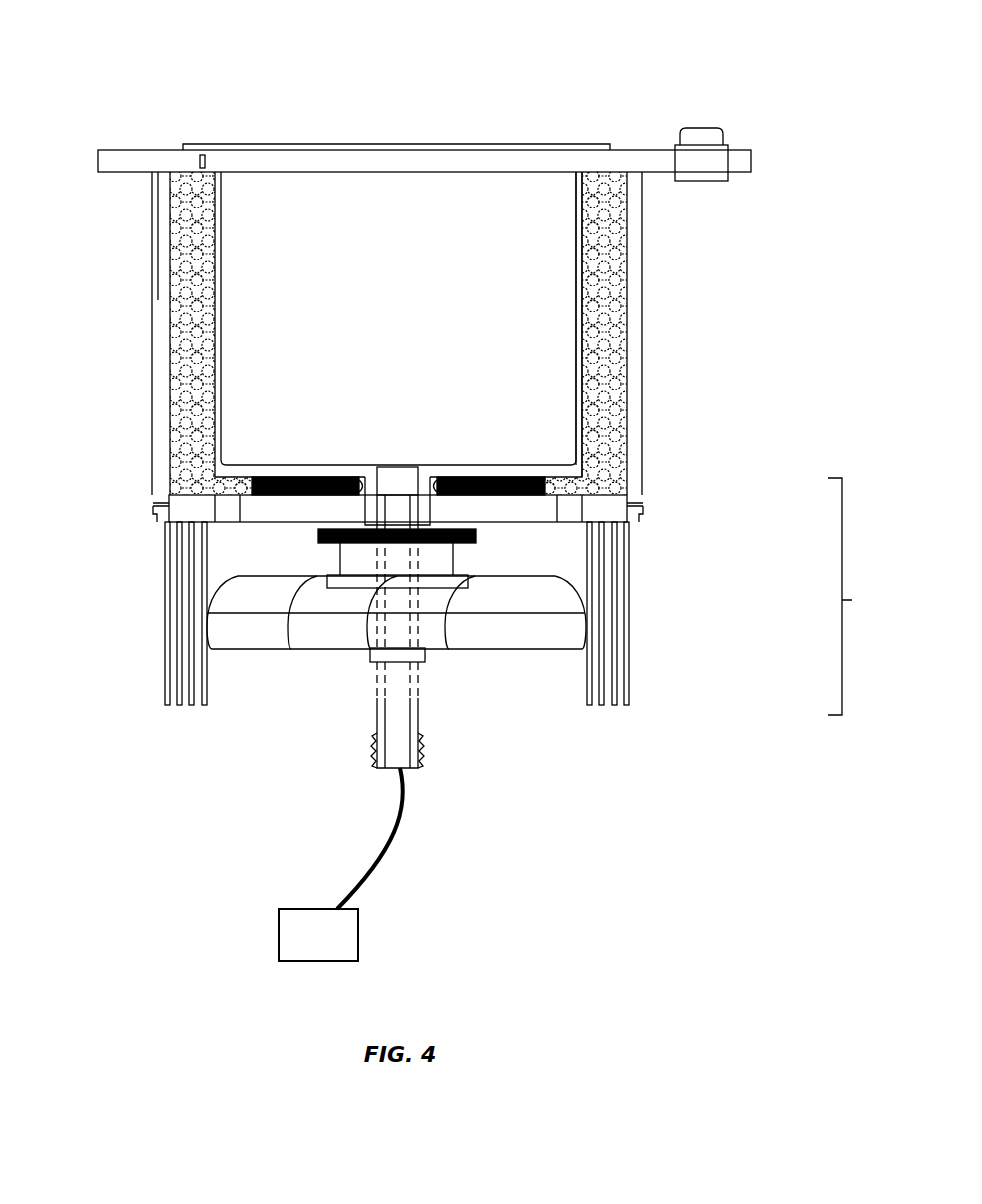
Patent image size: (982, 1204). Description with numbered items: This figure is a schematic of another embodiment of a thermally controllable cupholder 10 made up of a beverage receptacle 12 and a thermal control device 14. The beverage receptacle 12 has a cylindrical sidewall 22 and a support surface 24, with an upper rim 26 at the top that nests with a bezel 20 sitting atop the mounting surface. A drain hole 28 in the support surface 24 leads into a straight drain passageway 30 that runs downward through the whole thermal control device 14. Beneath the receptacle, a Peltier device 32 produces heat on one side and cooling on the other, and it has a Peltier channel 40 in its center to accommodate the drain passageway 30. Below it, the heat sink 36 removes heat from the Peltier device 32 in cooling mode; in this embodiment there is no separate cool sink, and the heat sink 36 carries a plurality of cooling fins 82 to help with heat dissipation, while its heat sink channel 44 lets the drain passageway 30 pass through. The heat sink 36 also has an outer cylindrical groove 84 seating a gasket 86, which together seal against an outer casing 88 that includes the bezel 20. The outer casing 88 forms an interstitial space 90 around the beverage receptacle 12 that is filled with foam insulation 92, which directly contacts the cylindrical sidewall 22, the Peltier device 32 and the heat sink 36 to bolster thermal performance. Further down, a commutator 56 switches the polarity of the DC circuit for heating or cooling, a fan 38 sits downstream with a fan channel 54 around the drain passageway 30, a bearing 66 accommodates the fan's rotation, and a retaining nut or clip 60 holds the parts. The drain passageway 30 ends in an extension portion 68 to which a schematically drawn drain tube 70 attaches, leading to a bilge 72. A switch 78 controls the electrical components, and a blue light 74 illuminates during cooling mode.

The thermally controllable cupholder 10 is at (588, 60).
The beverage receptacle 12 is at (592, 306).
The thermal control device 14 is at (856, 596).
The bezel 20 is at (762, 160).
The cylindrical sidewall 22 is at (582, 258).
The support surface 24 is at (284, 475).
The upper rim 26 is at (598, 144).
The drain hole 28 is at (407, 503).
The drain passageway 30 is at (420, 480).
The Peltier device 32 is at (558, 485).
The heat sink 36 is at (655, 515).
The fan 38 is at (598, 628).
The Peltier channel 40 is at (437, 485).
The heat sink channel 44 is at (366, 505).
The fan channel 54 is at (405, 630).
The commutator 56 is at (488, 538).
The retaining nut or clip 60 is at (360, 657).
The bearing 66 is at (346, 573).
The extension portion 68 is at (364, 728).
The drain tube 70 is at (393, 838).
The bilge 72 is at (318, 935).
The blue light 74 is at (190, 162).
The switch 78 is at (742, 137).
The cooling fins 82 is at (642, 698).
The outer cylindrical groove 84 is at (163, 502).
The gasket 86 is at (143, 507).
The outer casing 88 is at (655, 370).
The interstitial space 90 is at (632, 432).
The foam insulation 92 is at (170, 408).